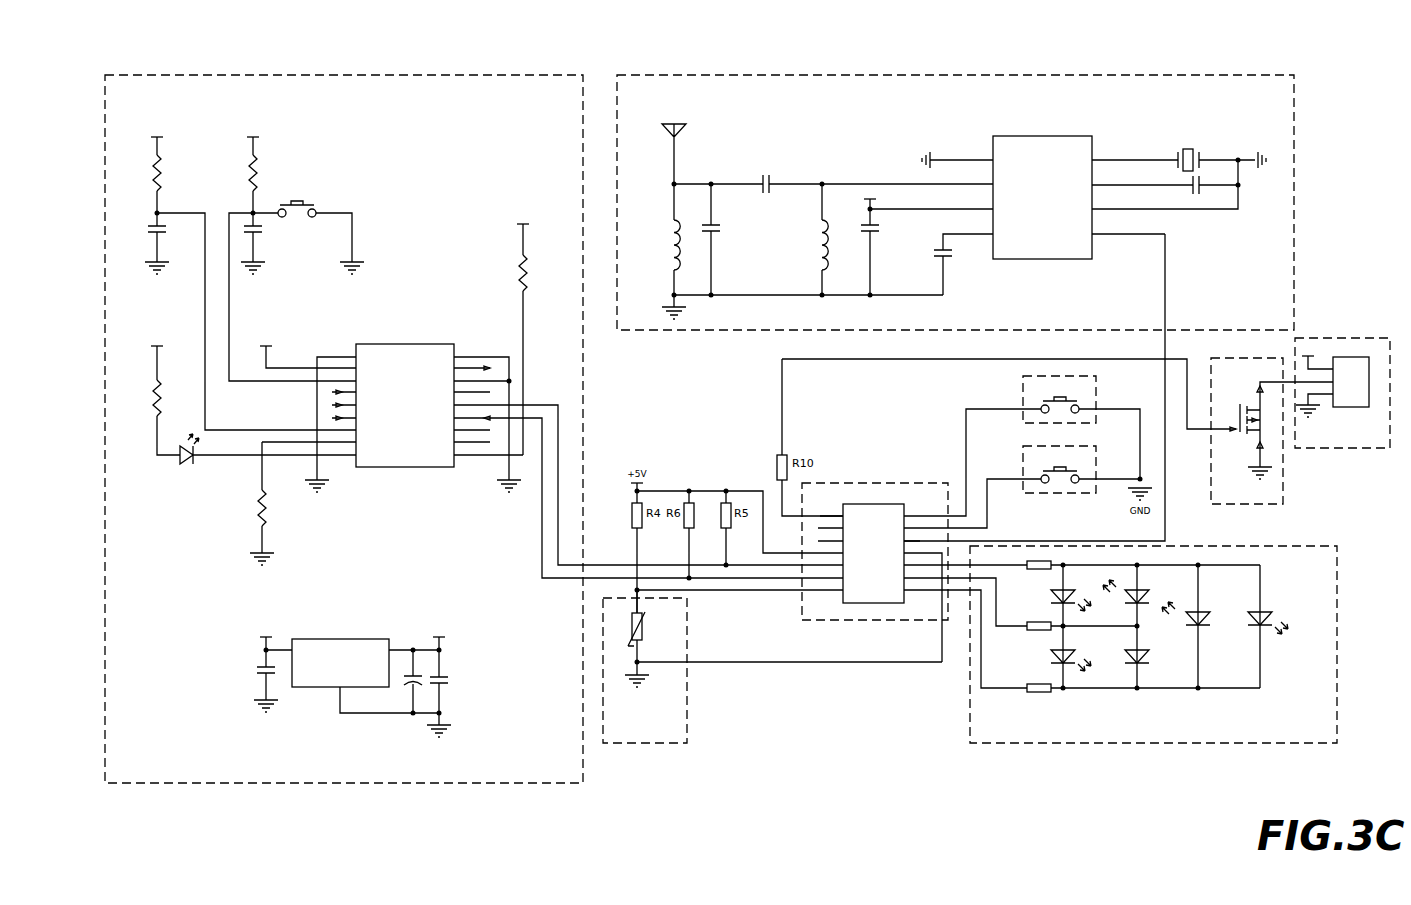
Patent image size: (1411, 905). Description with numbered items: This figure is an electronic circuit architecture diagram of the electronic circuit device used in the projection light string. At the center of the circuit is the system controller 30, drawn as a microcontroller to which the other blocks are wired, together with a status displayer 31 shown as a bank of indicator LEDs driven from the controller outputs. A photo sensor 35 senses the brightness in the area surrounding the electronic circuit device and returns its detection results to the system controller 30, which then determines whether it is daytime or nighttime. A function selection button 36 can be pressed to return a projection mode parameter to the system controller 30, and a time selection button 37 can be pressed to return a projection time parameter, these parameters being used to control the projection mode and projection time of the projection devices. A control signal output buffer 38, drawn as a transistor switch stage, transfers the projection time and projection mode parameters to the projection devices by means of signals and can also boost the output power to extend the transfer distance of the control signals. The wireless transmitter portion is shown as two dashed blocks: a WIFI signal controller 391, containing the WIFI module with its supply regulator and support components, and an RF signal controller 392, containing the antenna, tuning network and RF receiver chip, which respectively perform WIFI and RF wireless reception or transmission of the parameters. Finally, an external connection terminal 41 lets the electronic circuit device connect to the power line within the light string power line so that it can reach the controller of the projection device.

The system controller 30 is at (875, 620).
The status displayer 31 is at (970, 690).
The photo sensor 35 is at (687, 697).
The function selection button 36 is at (1023, 392).
The time selection button 37 is at (1023, 460).
The control signal output buffer 38 is at (1283, 468).
The external connection terminal 41 is at (1340, 448).
The WIFI signal controller 391 is at (583, 753).
The RF signal controller 392 is at (1295, 272).